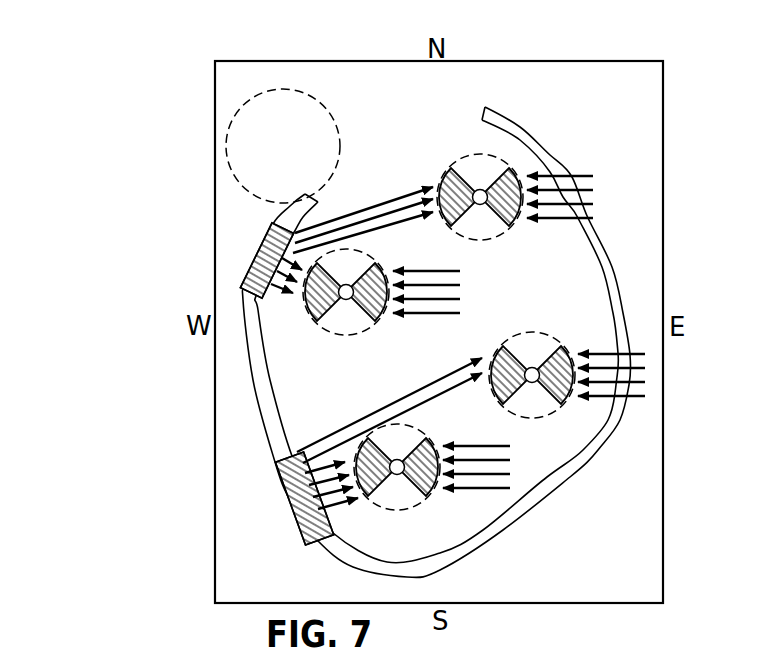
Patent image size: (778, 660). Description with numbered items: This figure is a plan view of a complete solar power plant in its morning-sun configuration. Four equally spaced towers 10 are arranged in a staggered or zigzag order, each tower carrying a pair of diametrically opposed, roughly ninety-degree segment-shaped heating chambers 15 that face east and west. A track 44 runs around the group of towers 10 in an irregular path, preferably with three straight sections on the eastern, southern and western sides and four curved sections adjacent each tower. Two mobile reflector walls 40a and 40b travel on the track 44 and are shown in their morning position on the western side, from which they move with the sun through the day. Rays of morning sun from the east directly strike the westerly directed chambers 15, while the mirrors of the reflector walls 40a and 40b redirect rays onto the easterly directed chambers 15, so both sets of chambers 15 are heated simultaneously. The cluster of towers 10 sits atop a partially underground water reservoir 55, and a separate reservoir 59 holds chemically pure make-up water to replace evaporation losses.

The tower 10 is at (494, 246).
The segment-shaped chamber 15 is at (429, 325).
The reflector wall 40a is at (283, 483).
The reflector wall 40b is at (262, 240).
The track 44 is at (508, 517).
The water reservoir 55 is at (655, 535).
The reservoir 59 is at (237, 116).